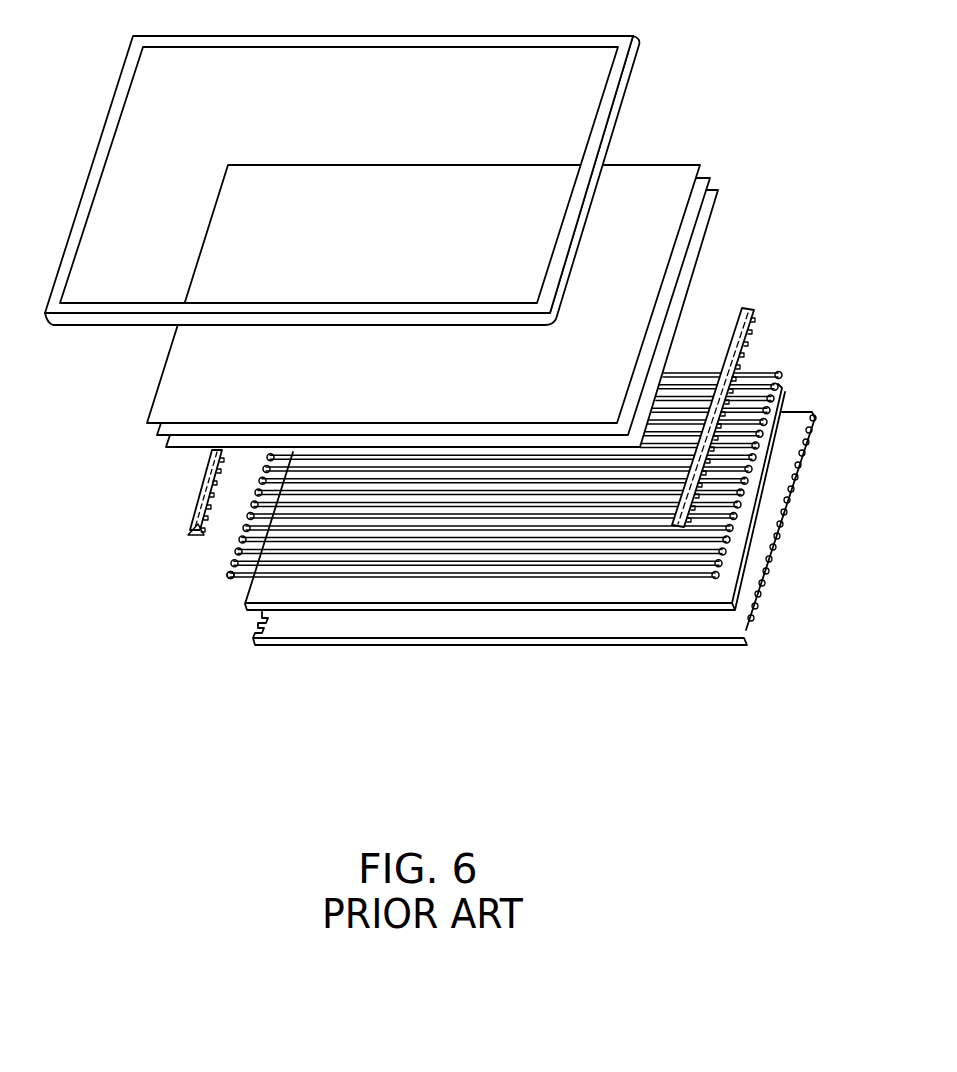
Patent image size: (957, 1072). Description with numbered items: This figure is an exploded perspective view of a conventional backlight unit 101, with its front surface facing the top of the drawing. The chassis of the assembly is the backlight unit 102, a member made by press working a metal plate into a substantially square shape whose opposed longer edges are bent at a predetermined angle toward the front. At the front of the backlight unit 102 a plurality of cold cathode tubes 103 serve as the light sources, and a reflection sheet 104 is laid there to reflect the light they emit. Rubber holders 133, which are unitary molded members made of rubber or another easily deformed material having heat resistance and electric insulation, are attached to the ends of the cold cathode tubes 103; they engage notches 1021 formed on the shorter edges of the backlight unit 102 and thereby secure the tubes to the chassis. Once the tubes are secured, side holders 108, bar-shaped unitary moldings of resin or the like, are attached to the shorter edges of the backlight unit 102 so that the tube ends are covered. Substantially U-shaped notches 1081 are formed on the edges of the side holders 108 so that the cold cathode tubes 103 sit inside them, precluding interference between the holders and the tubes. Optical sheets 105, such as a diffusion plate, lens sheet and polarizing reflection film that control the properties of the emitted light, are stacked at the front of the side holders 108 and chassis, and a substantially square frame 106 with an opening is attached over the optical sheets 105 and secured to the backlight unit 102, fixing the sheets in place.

The backlight unit 101 is at (274, 711).
The backlight unit (chassis) 102 is at (542, 611).
The notches 1021 is at (750, 629).
The cold cathode tubes 103 is at (244, 582).
The reflection sheet 104 is at (265, 592).
The optical sheets 105 is at (690, 148).
The frame 106 is at (120, 70).
The side holders 108 is at (158, 492).
The notches 1081 is at (222, 503).
The rubber holders 133 is at (228, 576).